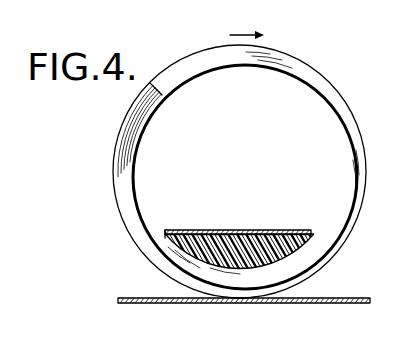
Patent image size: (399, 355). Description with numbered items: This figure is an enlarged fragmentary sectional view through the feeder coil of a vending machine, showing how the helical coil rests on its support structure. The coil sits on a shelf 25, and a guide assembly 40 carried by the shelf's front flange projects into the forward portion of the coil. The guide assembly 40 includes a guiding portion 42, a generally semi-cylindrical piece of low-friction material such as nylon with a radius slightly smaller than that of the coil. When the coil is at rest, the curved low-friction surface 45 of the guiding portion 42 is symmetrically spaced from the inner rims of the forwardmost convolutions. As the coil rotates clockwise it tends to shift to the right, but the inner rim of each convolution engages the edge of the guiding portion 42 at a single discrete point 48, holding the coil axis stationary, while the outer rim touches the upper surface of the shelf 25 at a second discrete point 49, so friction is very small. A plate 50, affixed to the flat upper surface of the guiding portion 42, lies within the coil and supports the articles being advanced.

The shelf 25 is at (349, 298).
The guide assembly 40 is at (226, 257).
The guiding portion 42 is at (164, 230).
The curved low-friction surface 45 is at (272, 265).
The single discrete point 48 is at (162, 237).
The second single discrete point 49 is at (241, 304).
The plate 50 is at (226, 231).